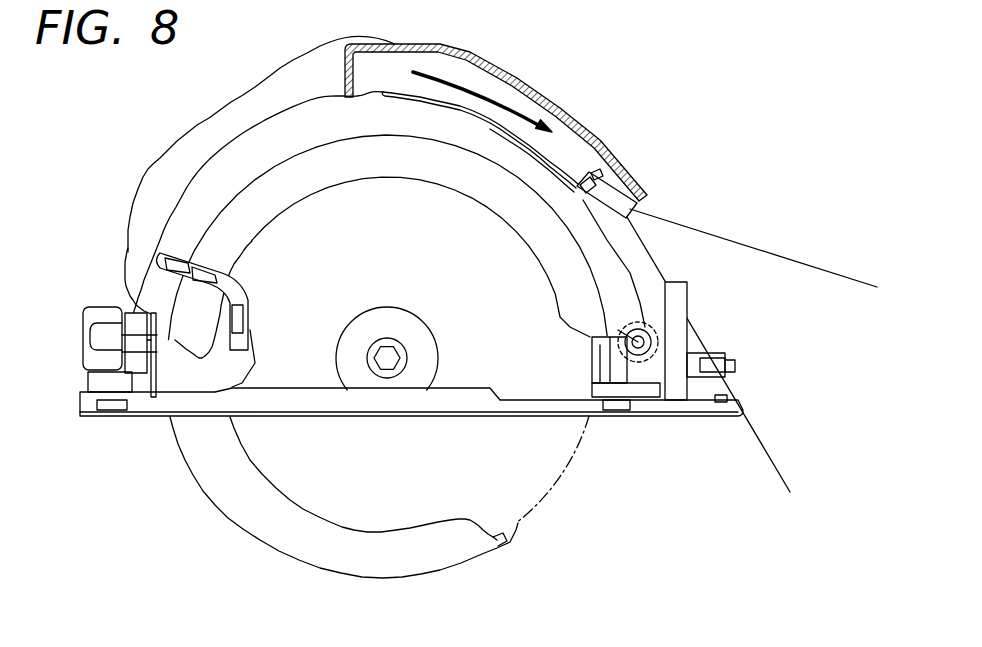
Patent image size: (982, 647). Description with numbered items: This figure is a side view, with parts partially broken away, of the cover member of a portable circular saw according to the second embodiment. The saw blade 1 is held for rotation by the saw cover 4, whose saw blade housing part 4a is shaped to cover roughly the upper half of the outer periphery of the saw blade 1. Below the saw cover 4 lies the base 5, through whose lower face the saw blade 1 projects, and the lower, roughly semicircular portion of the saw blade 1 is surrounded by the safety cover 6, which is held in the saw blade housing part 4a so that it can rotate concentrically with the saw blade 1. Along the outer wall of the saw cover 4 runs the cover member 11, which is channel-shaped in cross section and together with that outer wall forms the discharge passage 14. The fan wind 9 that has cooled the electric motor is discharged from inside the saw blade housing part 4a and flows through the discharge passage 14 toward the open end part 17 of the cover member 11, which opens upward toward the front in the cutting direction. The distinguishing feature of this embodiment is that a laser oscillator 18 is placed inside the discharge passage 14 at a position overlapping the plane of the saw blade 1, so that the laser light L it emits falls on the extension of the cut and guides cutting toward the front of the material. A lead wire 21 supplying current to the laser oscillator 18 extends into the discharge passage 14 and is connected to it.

The saw blade 1 is at (547, 497).
The saw cover 4 is at (190, 187).
The saw blade housing part 4a is at (273, 140).
The base 5 is at (645, 420).
The safety cover 6 is at (230, 498).
The fan wind 9 is at (511, 100).
The cover member 11 is at (570, 103).
The discharge passage 14 is at (472, 80).
The open end part 17 is at (647, 206).
The laser oscillator 18 is at (615, 190).
The lead wire 21 is at (557, 165).
The laser light L is at (802, 262).